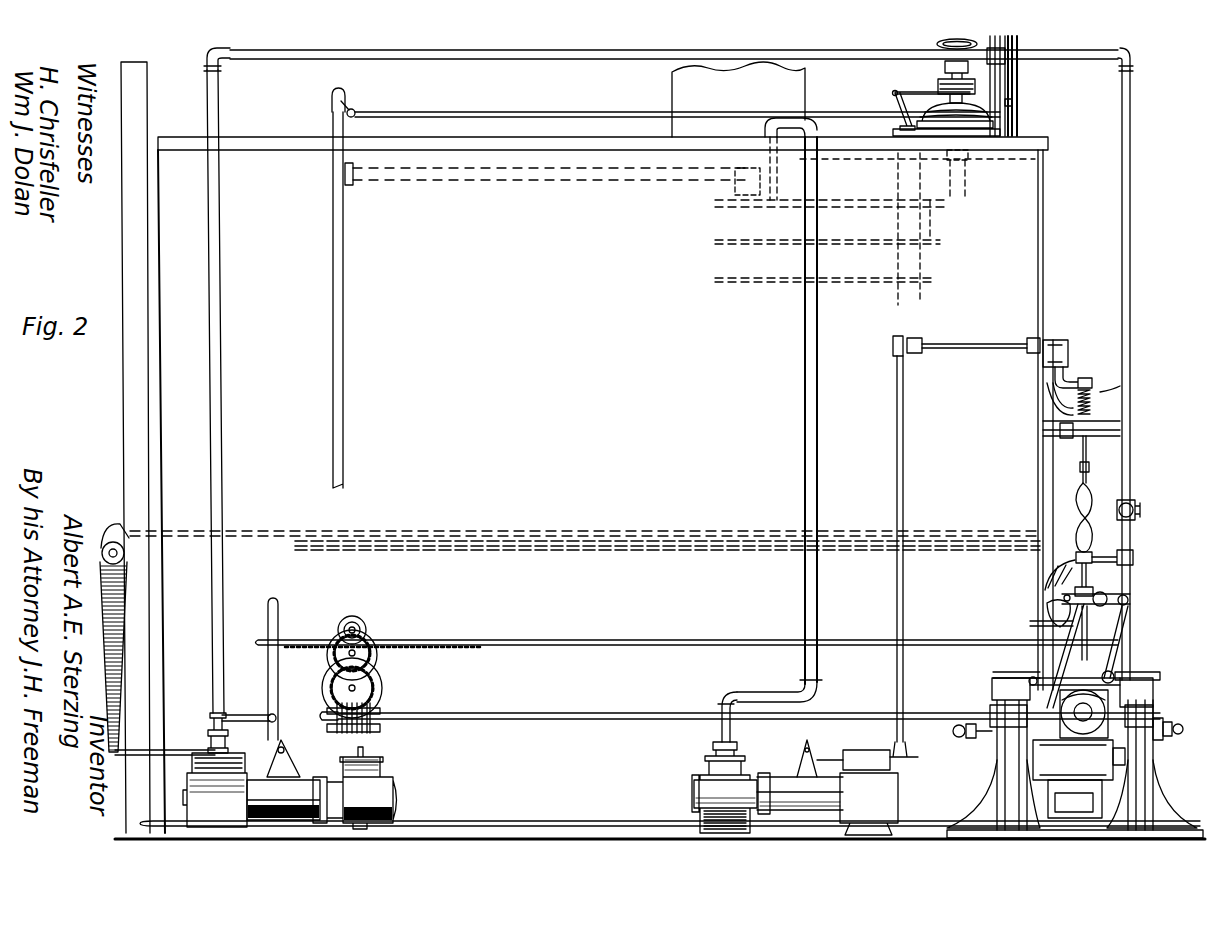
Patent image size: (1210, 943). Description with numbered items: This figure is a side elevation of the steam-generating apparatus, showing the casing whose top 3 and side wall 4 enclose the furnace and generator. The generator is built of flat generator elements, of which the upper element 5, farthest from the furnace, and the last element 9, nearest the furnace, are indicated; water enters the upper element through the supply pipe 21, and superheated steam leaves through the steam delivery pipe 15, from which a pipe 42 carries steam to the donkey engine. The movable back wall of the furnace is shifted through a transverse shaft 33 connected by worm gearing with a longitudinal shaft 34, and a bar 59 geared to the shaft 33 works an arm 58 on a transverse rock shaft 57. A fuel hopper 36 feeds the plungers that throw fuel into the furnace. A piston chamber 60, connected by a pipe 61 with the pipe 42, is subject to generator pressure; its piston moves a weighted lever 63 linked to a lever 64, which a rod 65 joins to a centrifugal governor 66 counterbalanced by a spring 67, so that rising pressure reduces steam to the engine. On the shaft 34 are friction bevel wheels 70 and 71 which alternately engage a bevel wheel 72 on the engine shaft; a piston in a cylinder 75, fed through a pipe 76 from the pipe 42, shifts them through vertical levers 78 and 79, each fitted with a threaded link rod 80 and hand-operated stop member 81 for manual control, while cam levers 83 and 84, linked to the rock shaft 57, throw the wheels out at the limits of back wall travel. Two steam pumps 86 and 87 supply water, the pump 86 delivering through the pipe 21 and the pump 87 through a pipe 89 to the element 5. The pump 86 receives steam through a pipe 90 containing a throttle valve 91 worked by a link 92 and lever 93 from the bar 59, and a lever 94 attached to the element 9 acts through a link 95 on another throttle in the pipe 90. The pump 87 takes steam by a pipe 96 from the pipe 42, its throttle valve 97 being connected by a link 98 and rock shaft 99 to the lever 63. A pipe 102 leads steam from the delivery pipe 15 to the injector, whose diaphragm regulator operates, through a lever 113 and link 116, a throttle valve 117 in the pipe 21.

The top 3 is at (598, 137).
The side wall 4 is at (619, 491).
The generator element 5 is at (768, 283).
The generator element 9 is at (375, 536).
The steam delivery pipe 15 is at (1017, 92).
The pipe 21 is at (345, 442).
The transverse shaft 33 is at (382, 662).
The longitudinal shaft 34 is at (456, 712).
The fuel hopper 36 is at (1095, 495).
The pipe 42 is at (1131, 192).
The transverse rock shaft 57 is at (1130, 603).
The arm 58 is at (1127, 625).
The bar 59 is at (758, 640).
The piston chamber 60 is at (1100, 392).
The pipe 61 is at (1128, 436).
The weighted lever 63 is at (1052, 348).
The lever 64 is at (1083, 365).
The rod 65 is at (1088, 455).
The centrifugal governor 66 is at (1100, 530).
The spring 67 is at (1101, 402).
The bevel wheel 70 is at (1048, 737).
The bevel wheel 71 is at (1140, 690).
The bevel wheel 72 is at (1122, 672).
The cylinder 75 is at (1130, 750).
The pipe 76 is at (1075, 799).
The vertical lever 78 is at (1027, 782).
The vertical lever 79 is at (1170, 770).
The threaded link rod 80 is at (1163, 720).
The hand-operated stop member 81 is at (1182, 722).
The cam lever 83 is at (1038, 673).
The cam lever 84 is at (1105, 672).
The steam pump 86 is at (380, 783).
The steam pump 87 is at (700, 776).
The pipe 89 is at (804, 445).
The pipe 90 is at (225, 567).
The throttle valve 91 is at (208, 722).
The link 92 is at (246, 716).
The lever 93 is at (268, 671).
The lever 94 is at (118, 623).
The link 95 is at (194, 755).
The pipe 96 is at (925, 772).
The throttle valve 97 is at (900, 753).
The link 98 is at (905, 450).
The rock shaft 99 is at (948, 347).
The pipe 102 is at (1015, 118).
The lever 113 is at (918, 92).
The link 116 is at (493, 113).
The throttle valve 117 is at (348, 101).